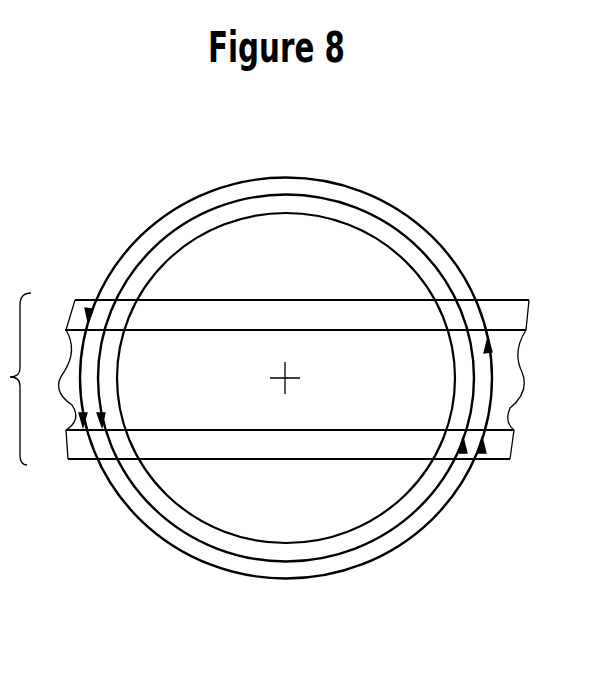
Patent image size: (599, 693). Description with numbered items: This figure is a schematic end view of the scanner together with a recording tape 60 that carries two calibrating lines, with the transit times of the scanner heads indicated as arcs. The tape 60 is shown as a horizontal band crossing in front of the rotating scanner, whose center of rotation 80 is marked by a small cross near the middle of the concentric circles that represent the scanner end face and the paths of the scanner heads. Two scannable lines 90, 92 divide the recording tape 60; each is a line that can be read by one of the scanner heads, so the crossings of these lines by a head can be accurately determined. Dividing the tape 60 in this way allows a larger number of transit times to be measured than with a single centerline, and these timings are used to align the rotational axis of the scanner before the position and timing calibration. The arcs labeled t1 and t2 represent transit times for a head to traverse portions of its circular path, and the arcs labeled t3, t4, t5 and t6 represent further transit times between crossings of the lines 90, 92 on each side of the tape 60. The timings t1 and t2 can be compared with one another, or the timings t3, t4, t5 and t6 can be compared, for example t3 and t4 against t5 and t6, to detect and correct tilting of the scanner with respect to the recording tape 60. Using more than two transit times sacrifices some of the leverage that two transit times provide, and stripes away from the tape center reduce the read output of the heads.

The transit time t1 is at (244, 561).
The transit time t2 is at (428, 258).
The transit time t3 is at (492, 370).
The transit time t4 is at (197, 192).
The transit time t5 is at (83, 367).
The transit time t6 is at (150, 536).
The recording tape 60 is at (78, 462).
The center of rotation of the scanner 80 is at (278, 372).
The scannable line 90 is at (387, 330).
The scannable line 92 is at (362, 430).